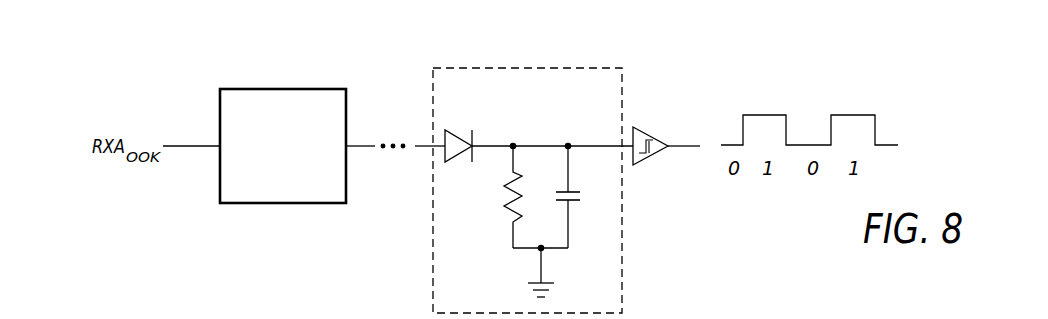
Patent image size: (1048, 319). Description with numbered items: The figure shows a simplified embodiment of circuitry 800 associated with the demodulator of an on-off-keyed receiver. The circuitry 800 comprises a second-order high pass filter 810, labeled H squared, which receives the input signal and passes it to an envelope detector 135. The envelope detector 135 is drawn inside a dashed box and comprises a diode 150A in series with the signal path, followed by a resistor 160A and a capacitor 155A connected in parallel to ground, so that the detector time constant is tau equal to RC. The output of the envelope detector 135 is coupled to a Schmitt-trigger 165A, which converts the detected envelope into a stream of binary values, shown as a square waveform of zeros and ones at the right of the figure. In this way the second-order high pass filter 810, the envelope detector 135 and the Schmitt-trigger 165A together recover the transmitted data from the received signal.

The circuitry 800 is at (642, 78).
The second-order high pass filter 810 is at (282, 89).
The envelope detector 135 is at (432, 275).
The diode 150A is at (452, 131).
The capacitor 155A is at (572, 200).
The resistor 160A is at (507, 200).
The Schmitt-trigger 165A is at (642, 134).